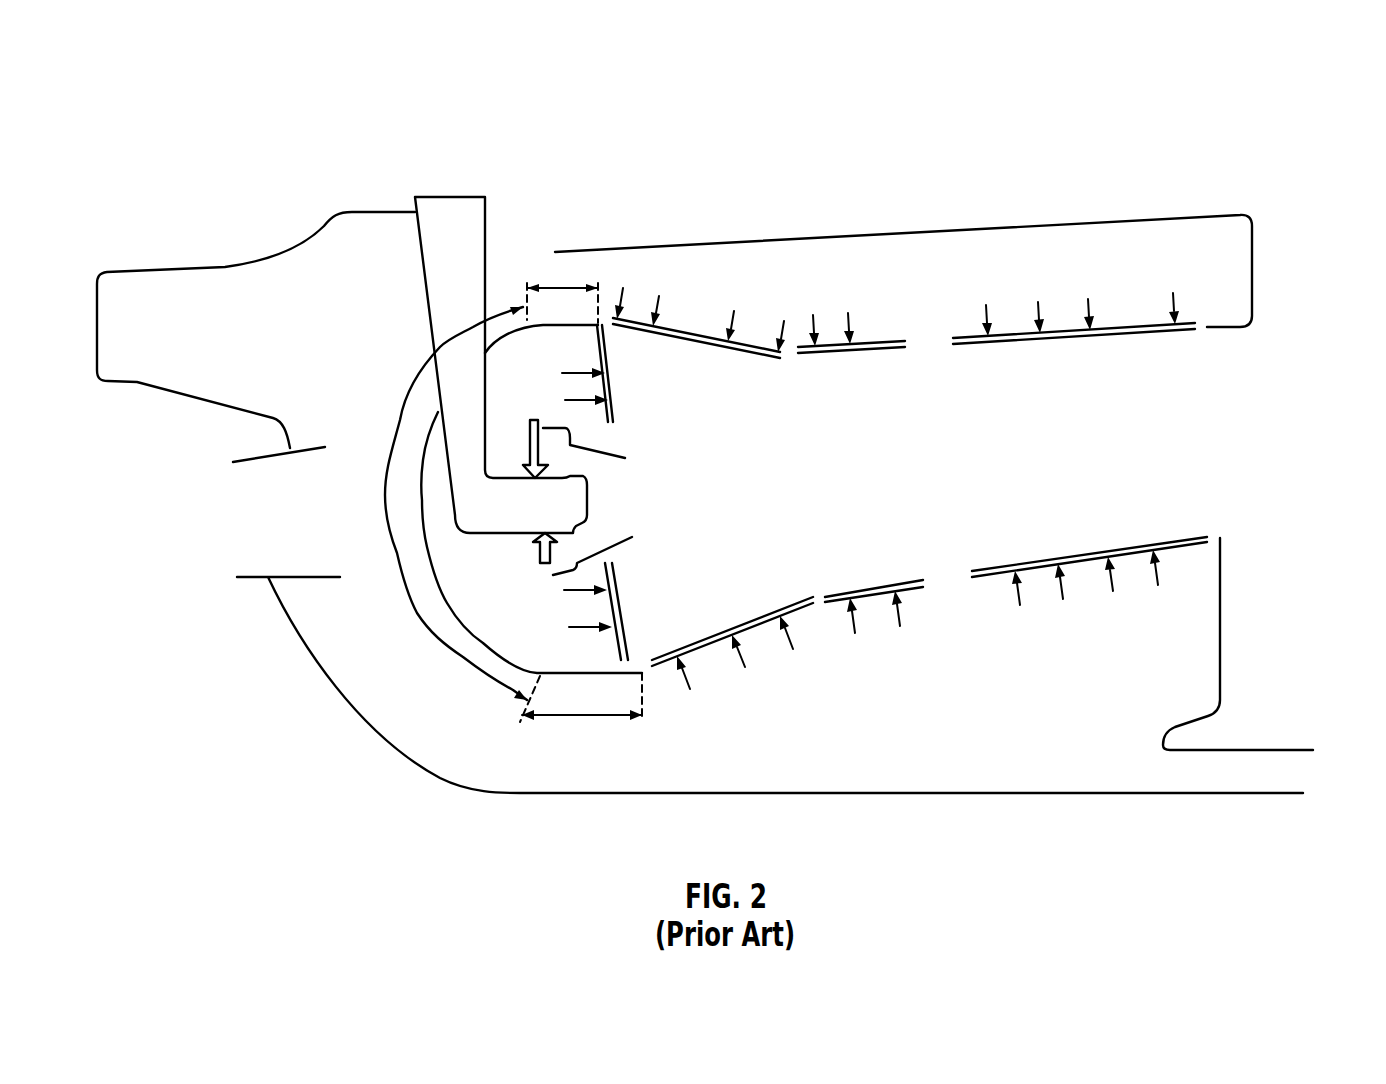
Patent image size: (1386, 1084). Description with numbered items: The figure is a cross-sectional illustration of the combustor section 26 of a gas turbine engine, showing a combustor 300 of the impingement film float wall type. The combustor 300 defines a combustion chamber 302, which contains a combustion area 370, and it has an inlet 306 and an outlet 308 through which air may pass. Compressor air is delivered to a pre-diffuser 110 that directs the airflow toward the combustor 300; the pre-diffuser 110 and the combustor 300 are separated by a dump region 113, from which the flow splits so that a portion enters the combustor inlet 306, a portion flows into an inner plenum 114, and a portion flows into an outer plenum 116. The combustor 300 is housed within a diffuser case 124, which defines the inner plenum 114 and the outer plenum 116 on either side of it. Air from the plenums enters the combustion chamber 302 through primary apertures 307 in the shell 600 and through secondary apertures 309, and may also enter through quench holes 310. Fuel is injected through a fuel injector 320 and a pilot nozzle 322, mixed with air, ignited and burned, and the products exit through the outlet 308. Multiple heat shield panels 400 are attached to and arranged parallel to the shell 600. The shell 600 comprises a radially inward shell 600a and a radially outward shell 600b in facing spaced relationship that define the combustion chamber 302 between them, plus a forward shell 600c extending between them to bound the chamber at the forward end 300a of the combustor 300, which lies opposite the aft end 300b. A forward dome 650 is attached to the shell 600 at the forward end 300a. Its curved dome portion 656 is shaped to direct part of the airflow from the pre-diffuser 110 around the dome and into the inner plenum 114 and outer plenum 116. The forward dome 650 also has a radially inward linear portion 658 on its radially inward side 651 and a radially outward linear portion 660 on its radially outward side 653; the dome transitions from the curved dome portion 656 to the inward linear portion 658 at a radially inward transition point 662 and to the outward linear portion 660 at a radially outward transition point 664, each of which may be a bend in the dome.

The combustor section 26 is at (977, 84).
The pre-diffuser 110 is at (308, 473).
The dump region 113 is at (410, 656).
The inner plenum 114 is at (1065, 651).
The outer plenum 116 is at (820, 288).
The diffuser case 124 is at (837, 233).
The combustor 300 is at (960, 336).
The forward end 300a is at (478, 121).
The aft end 300b is at (1277, 149).
The combustion chamber 302 is at (849, 499).
The inlet 306 is at (630, 492).
The primary apertures 307 is at (1132, 326).
The outlet 308 is at (1220, 433).
The secondary apertures 309 is at (1130, 331).
The quench holes 310 is at (927, 345).
The fuel injector 320 is at (487, 222).
The pilot nozzle 322 is at (588, 497).
The combustion area 370 is at (773, 466).
The heat shield panels 400 is at (637, 328).
The shell 600 is at (565, 379).
The radially inward shell 600a is at (912, 597).
The radially outward shell 600b is at (1008, 335).
The forward shell 600c is at (607, 608).
The forward dome 650 is at (422, 533).
The radially inward side 651 is at (540, 805).
The radially outward side 653 is at (599, 162).
The curved dome portion 656 is at (417, 613).
The radially inward linear portion 658 is at (547, 718).
The radially outward linear portion 660 is at (552, 287).
The radially inward transition point 662 is at (537, 673).
The radially outward transition point 664 is at (527, 325).